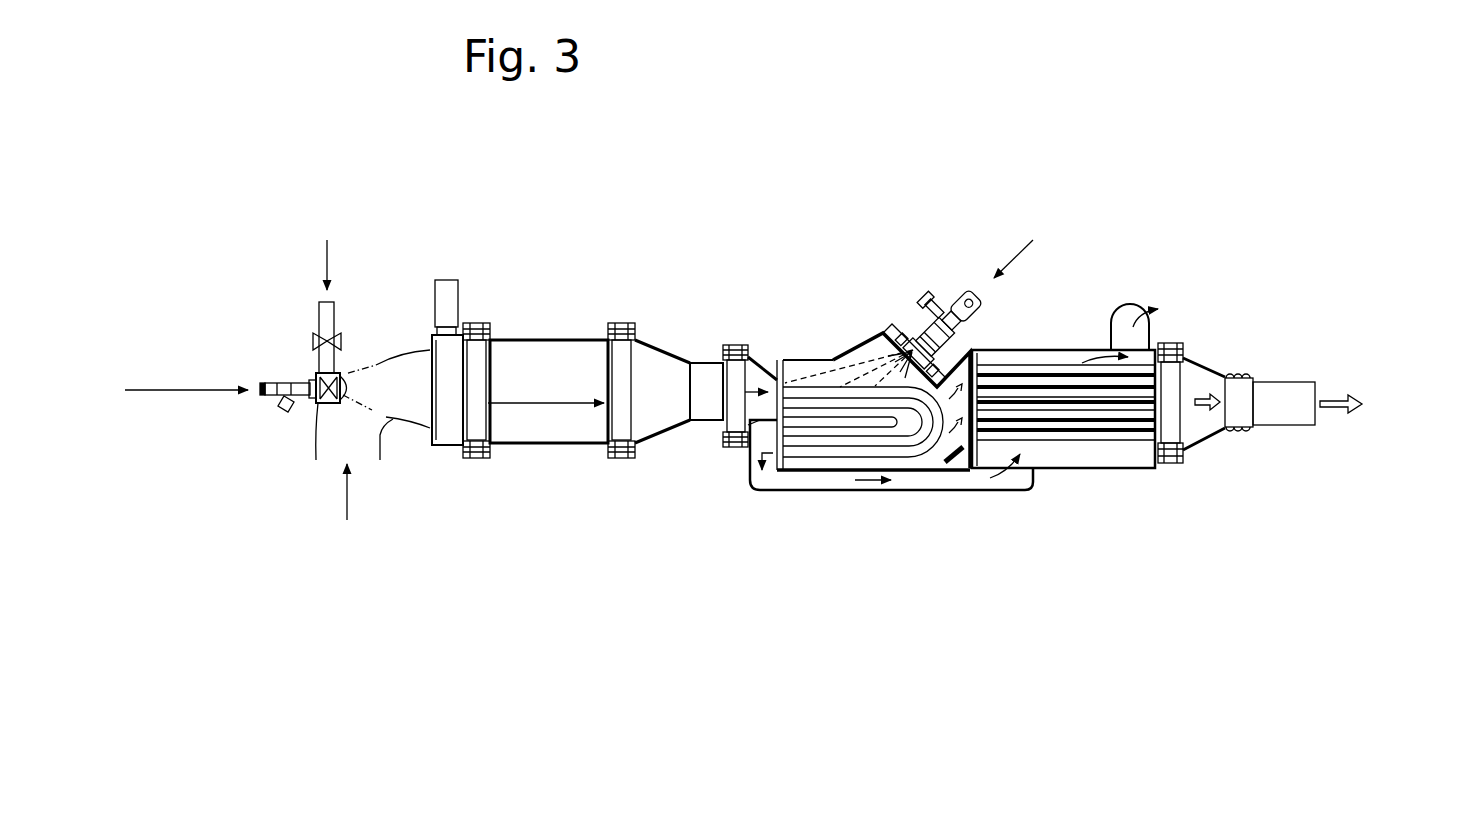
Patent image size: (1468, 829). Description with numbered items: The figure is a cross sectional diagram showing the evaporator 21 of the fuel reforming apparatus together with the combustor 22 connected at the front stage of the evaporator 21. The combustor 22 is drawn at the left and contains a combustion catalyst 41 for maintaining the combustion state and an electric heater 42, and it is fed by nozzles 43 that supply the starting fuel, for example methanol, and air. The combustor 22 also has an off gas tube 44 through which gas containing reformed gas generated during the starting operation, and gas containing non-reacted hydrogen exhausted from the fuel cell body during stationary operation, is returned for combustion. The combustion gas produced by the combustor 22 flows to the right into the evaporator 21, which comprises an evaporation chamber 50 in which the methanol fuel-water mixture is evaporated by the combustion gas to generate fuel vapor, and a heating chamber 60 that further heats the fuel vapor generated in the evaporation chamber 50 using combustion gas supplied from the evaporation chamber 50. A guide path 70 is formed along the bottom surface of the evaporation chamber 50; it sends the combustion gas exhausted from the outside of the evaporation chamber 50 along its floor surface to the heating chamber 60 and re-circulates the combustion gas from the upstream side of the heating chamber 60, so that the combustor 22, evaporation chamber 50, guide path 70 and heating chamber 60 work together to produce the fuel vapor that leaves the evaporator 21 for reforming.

The evaporator 21 is at (1246, 205).
The combustor 22 is at (552, 302).
The combustion catalyst 41 is at (540, 427).
The electric heater 42 is at (448, 437).
The nozzles 43 is at (290, 358).
The off gas tube 44 is at (317, 440).
The evaporation chamber 50 is at (855, 358).
The heating chamber 60 is at (1098, 455).
The guide path 70 is at (825, 480).